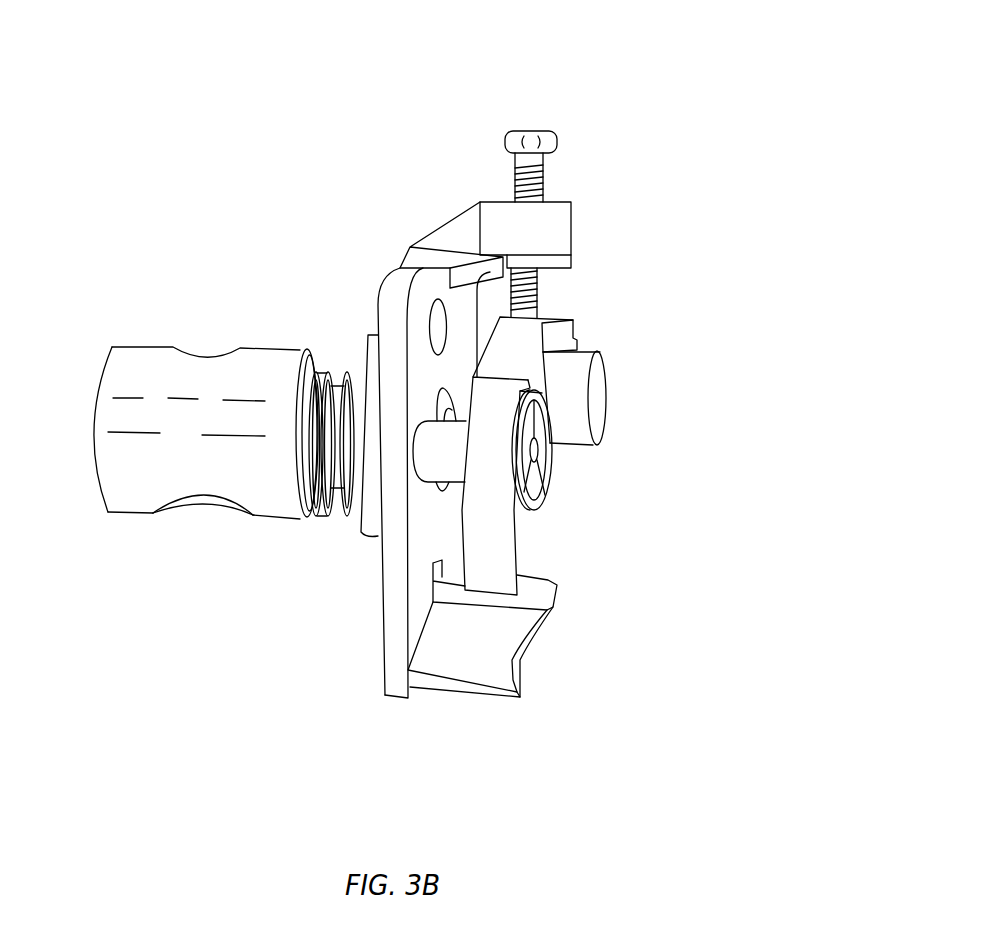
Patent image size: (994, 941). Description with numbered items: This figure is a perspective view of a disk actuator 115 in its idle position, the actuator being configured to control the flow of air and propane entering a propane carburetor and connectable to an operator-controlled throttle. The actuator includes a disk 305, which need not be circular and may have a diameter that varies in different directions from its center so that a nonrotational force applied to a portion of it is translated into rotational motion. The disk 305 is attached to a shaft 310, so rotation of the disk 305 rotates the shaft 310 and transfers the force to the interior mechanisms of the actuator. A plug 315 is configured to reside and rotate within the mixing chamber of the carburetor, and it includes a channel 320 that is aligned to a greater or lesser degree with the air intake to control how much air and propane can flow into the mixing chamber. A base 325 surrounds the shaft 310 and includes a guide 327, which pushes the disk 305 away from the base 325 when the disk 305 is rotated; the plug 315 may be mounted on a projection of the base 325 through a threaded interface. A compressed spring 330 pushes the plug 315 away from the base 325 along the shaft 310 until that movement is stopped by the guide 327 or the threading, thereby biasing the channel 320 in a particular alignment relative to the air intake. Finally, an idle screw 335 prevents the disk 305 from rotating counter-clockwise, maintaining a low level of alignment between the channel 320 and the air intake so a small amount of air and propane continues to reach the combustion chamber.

The disk actuator 115 is at (195, 163).
The disk 305 is at (513, 533).
The shaft 310 is at (330, 407).
The plug 315 is at (148, 378).
The channel 320 is at (203, 505).
The base 325 is at (418, 362).
The guide 327 is at (433, 456).
The compressed spring 330 is at (325, 517).
The idle screw 335 is at (551, 130).